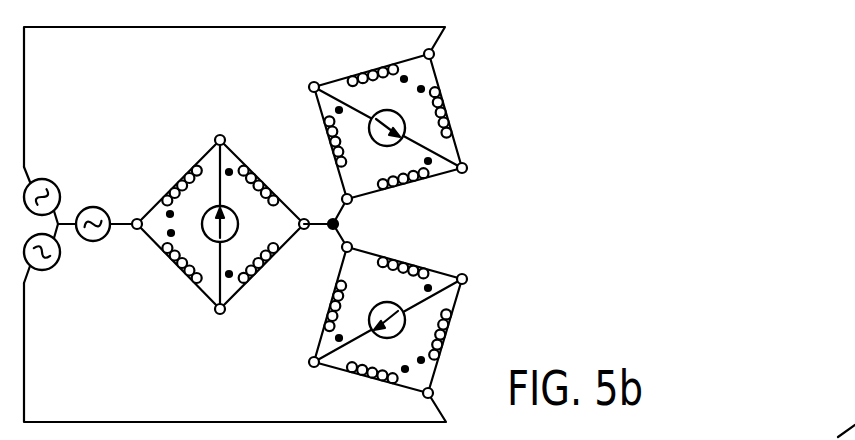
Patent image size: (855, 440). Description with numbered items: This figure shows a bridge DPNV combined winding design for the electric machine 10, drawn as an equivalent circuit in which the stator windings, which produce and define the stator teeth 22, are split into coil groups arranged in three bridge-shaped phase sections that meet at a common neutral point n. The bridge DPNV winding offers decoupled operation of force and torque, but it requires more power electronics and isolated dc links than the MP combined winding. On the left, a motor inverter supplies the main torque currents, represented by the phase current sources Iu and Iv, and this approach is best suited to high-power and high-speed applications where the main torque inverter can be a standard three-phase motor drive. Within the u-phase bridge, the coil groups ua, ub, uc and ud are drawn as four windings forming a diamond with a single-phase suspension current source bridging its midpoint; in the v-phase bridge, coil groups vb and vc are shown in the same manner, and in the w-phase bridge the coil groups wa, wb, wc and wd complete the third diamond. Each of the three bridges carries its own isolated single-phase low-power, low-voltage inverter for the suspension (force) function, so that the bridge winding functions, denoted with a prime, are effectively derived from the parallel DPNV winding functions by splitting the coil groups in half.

The electric machine 10 is at (520, 42).
The stator teeth 22 is at (446, 110).
The neutral point n is at (332, 223).
The u-phase current source Iu is at (95, 211).
The v/w-phase current sources Iv is at (54, 225).
The u-phase winding a ua is at (176, 185).
The u-phase winding b ub is at (177, 261).
The u-phase winding c uc is at (257, 270).
The u-phase winding d ud is at (256, 177).
The v-phase winding b vb is at (377, 61).
The v-phase winding c vc is at (326, 137).
The w-phase winding a wa is at (377, 384).
The w-phase winding b wb is at (447, 338).
The w-phase winding c wc is at (404, 262).
The w-phase winding d wd is at (318, 311).